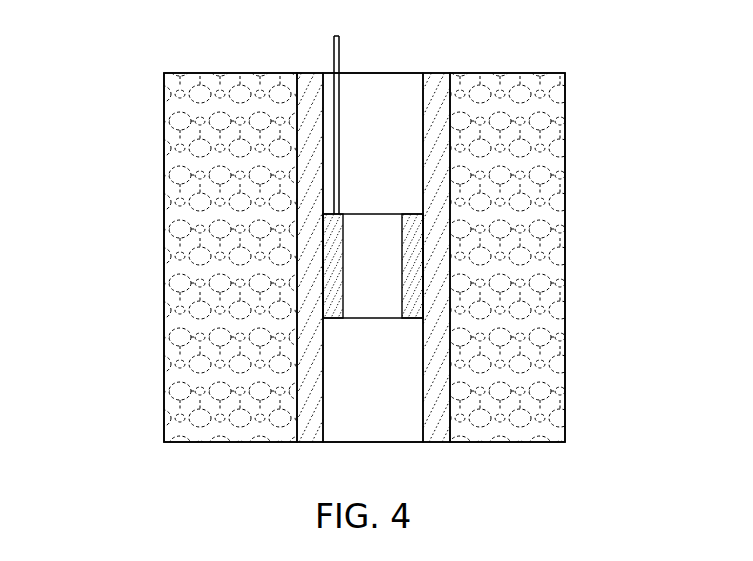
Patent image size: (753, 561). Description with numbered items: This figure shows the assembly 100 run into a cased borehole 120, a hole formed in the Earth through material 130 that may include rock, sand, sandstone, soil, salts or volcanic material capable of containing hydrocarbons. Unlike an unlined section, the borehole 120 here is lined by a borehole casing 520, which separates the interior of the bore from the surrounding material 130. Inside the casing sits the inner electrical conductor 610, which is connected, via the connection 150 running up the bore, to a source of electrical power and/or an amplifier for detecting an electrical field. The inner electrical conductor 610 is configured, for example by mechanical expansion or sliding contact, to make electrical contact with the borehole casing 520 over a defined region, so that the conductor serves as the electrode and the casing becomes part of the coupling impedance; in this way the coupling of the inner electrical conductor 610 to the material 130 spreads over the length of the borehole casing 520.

The assembly 100 is at (120, 43).
The borehole 120 is at (368, 417).
The material 130 is at (507, 195).
The connection 150 is at (339, 59).
The borehole casing 520 is at (437, 360).
The inner electrical conductor 610 is at (333, 258).